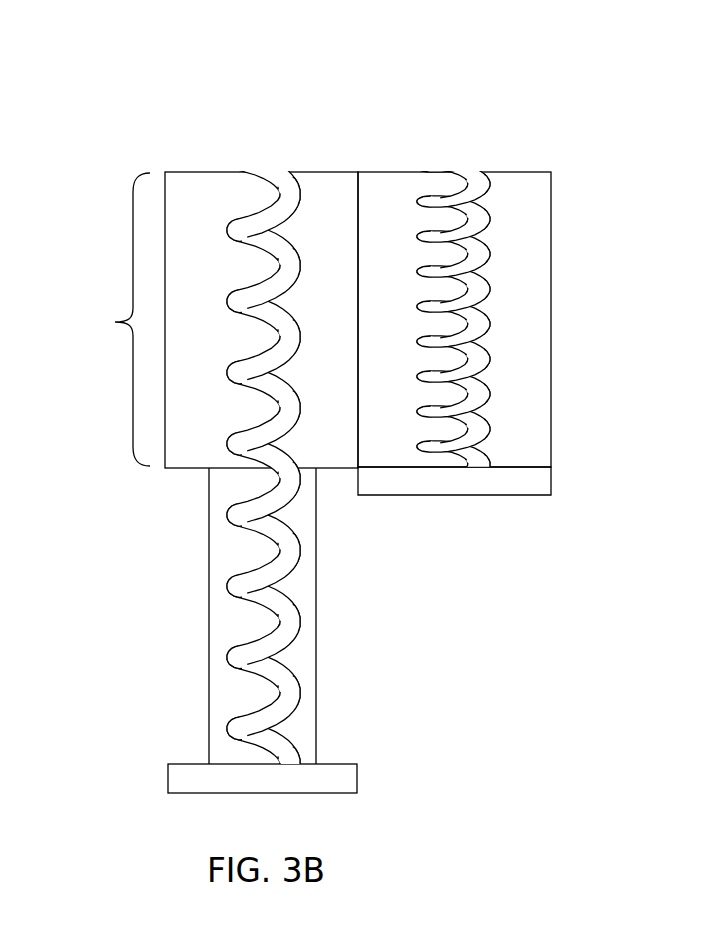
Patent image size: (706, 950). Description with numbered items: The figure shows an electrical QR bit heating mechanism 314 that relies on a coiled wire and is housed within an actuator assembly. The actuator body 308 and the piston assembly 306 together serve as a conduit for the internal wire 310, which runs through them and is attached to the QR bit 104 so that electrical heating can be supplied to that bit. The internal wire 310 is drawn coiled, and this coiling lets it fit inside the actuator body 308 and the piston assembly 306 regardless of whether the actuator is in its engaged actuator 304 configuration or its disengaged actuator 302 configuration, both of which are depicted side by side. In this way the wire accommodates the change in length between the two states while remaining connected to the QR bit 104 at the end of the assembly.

The electrical QR bit heating mechanism 314 is at (572, 110).
The engaged actuator 304 is at (197, 172).
The disengaged actuator 302 is at (540, 238).
The actuator body 308 is at (108, 319).
The piston assembly 306 is at (313, 604).
The internal wire 310 is at (295, 695).
The QR bit 104 is at (348, 780).